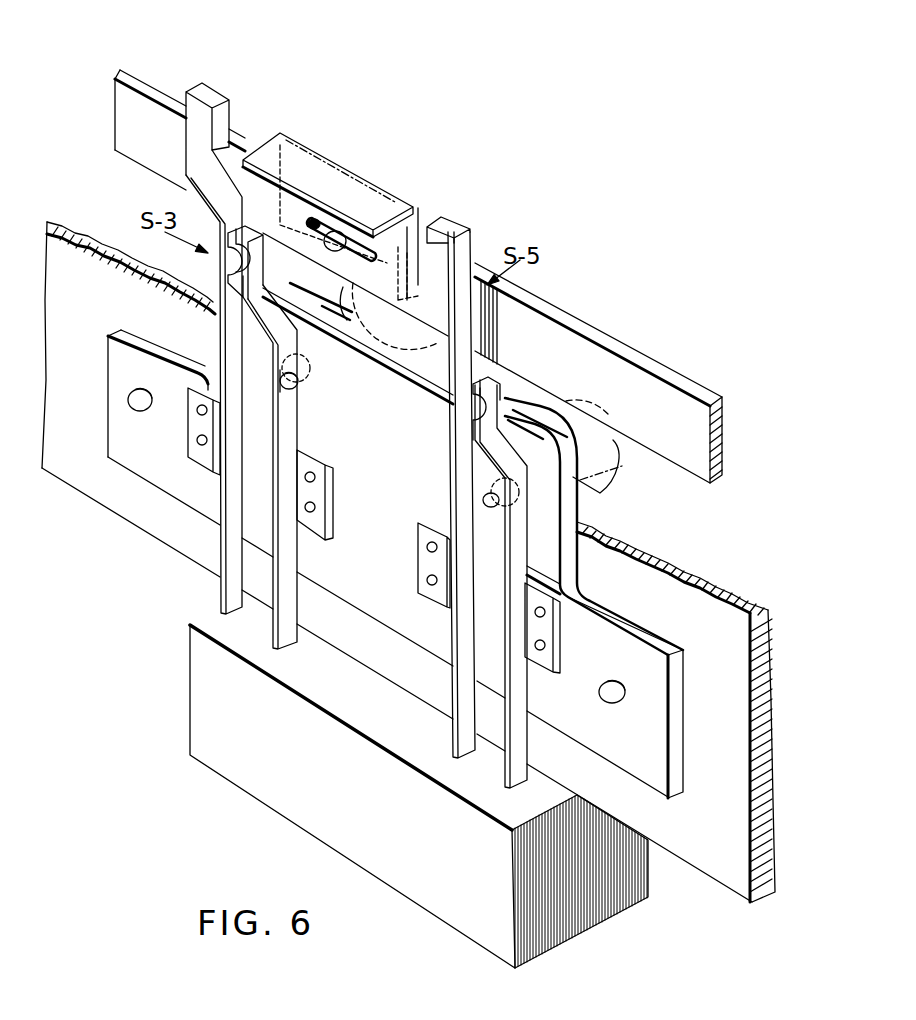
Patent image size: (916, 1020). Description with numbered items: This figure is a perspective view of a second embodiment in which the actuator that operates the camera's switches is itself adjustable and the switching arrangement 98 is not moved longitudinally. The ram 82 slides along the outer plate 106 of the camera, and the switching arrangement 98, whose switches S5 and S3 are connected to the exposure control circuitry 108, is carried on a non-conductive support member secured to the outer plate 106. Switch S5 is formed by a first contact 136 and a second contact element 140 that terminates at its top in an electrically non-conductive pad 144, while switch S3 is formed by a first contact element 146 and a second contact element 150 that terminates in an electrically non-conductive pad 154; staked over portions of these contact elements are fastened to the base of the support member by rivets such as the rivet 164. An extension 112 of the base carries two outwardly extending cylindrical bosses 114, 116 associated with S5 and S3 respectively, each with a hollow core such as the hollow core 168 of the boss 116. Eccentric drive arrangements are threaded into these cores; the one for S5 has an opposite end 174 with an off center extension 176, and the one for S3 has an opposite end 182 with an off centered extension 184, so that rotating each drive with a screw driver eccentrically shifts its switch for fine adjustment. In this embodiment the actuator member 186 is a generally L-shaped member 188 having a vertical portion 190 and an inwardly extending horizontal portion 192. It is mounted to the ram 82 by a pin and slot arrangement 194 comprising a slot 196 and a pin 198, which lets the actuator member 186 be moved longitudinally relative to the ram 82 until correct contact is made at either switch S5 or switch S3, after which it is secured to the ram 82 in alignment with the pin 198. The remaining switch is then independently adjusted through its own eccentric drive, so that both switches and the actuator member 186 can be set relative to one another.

The ram 82 is at (563, 335).
The switching arrangement 98 is at (735, 533).
The outer plate 106 is at (733, 760).
The exposure control circuitry 108 is at (578, 922).
The extension 112 is at (412, 396).
The boss 114 is at (620, 465).
The boss 116 is at (340, 294).
The first contact 136 is at (514, 745).
The second contact element 140 is at (470, 722).
The electrically non-conductive pad 144 is at (447, 226).
The first contact element 146 is at (288, 629).
The second contact element 150 is at (232, 599).
The electrically non-conductive pad 154 is at (230, 114).
The rivet 164 is at (308, 469).
The hollow core 168 is at (300, 361).
The opposite end 174 is at (522, 488).
The off center extension 176 is at (495, 505).
The opposite end 182 is at (305, 384).
The off centered extension 184 is at (286, 387).
The actuator member 186 is at (374, 205).
The L-shaped member 188 is at (407, 197).
The vertical portion 190 is at (380, 303).
The horizontal portion 192 is at (318, 168).
The pin and slot arrangement 194 is at (325, 255).
The slot 196 is at (307, 226).
The pin 198 is at (267, 237).